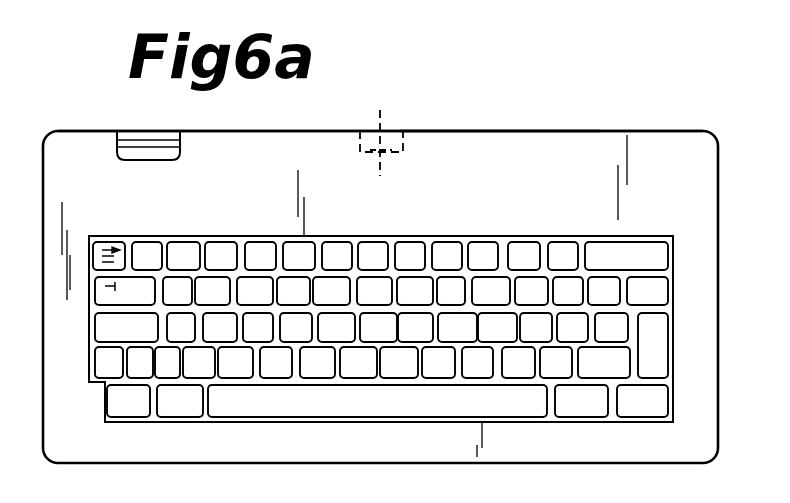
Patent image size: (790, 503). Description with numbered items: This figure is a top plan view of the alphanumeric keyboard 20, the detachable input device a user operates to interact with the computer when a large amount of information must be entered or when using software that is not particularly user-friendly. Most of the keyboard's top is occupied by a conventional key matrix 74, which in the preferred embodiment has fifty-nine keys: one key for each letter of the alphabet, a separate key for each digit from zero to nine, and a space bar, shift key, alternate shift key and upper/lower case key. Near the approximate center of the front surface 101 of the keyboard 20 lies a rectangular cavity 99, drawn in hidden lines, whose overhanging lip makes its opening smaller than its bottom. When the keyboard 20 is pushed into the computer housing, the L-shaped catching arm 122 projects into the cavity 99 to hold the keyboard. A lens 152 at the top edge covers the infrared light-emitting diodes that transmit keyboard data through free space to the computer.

The alphanumeric keyboard 20 is at (592, 126).
The key matrix 74 is at (330, 238).
The cavity 99 is at (372, 130).
The front surface 101 is at (260, 130).
The catching arm 122 is at (492, 130).
The lens 152 is at (137, 130).